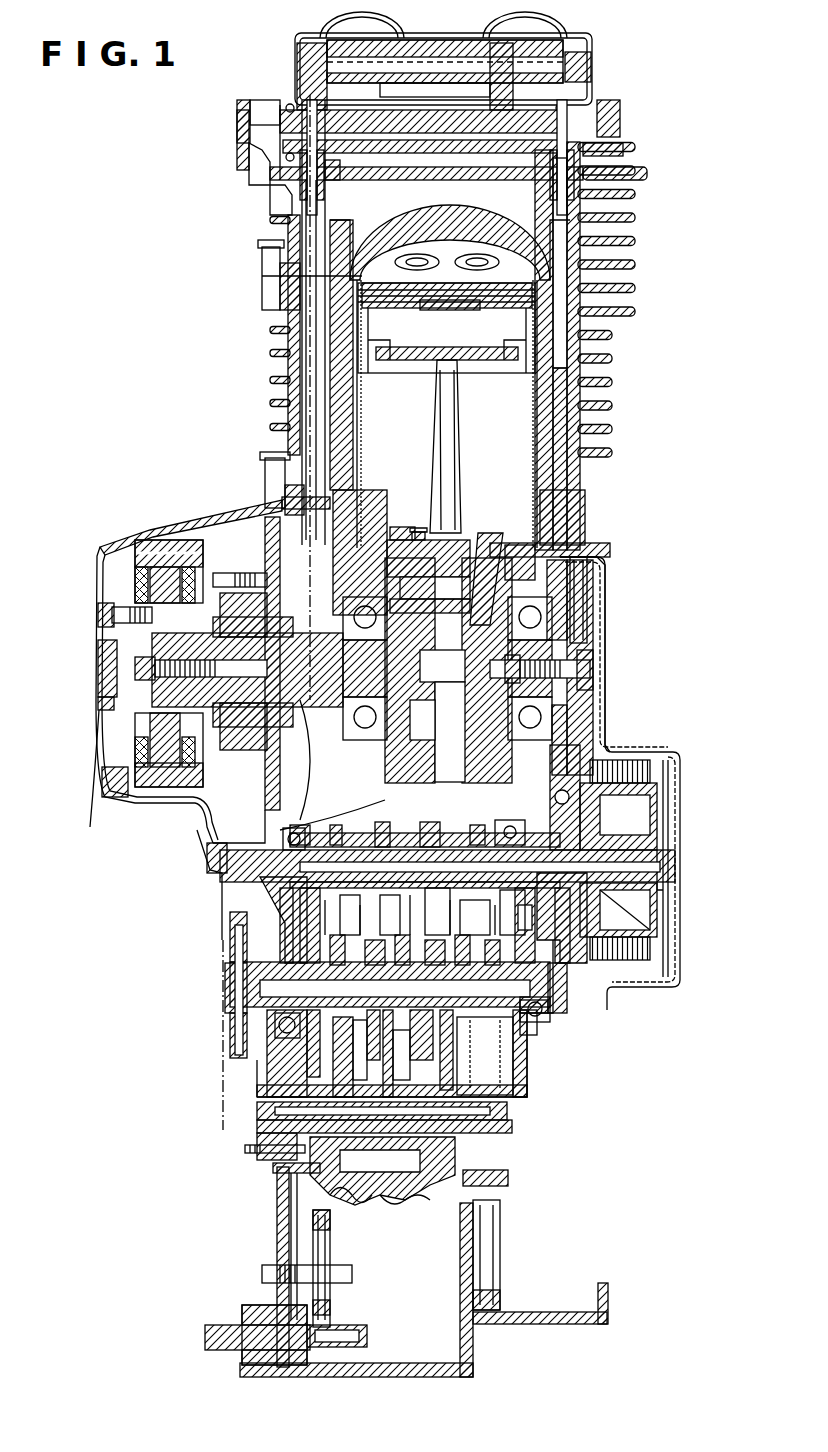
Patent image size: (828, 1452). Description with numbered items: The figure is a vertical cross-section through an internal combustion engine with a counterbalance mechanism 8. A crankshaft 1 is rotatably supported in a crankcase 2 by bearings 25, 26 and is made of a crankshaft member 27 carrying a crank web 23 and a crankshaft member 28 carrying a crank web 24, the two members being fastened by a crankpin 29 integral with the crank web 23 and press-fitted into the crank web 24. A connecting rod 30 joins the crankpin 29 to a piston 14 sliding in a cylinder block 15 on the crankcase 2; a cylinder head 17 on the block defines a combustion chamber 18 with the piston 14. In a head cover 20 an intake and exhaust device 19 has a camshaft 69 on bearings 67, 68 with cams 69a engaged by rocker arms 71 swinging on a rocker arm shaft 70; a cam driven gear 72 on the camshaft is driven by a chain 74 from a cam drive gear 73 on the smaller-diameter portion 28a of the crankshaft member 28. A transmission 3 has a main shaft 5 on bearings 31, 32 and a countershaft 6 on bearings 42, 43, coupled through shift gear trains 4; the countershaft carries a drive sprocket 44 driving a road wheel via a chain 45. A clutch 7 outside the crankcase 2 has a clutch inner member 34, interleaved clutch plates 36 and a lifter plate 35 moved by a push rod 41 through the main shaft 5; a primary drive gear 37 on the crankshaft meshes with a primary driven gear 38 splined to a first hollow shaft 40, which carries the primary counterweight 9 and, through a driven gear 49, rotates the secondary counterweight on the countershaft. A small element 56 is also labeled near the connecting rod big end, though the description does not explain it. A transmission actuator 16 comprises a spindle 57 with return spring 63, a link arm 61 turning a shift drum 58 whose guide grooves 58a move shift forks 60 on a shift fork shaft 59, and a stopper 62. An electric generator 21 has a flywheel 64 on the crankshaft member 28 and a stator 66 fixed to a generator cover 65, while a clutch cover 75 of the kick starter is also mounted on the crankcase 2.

The crankshaft 1 is at (337, 692).
The crankcase 2 is at (581, 526).
The transmission 3 is at (210, 1013).
The shift gear trains 4 is at (372, 822).
The main shaft 5 is at (470, 820).
The countershaft 6 is at (237, 967).
The clutch 7 is at (670, 753).
The counterbalance mechanism 8 is at (482, 1038).
The primary counterweight 9 is at (473, 817).
The piston 14 is at (507, 382).
The cylinder block 15 is at (612, 354).
The transmission actuator 16 is at (407, 1240).
The cylinder head 17 is at (624, 185).
The combustion chamber 18 is at (447, 257).
The intake and exhaust device 19 is at (272, 105).
The head cover 20 is at (452, 58).
The electric generator 21 is at (147, 818).
The crank web 23 is at (502, 554).
The crank web 24 is at (401, 518).
The bearing 25 is at (567, 613).
The bearing 26 is at (287, 545).
The crankshaft member 27 is at (515, 545).
The crankshaft member 28 is at (410, 537).
The smaller-diameter portion 28a is at (322, 700).
The crankpin 29 is at (413, 617).
The connecting rod 30 is at (460, 435).
The bearing 31 is at (273, 833).
The bearing 32 is at (567, 737).
The clutch inner member 34 is at (680, 918).
The lifter plate 35 is at (680, 900).
The clutch plates 36 is at (657, 760).
The primary drive gear 37 is at (577, 713).
The primary driven gear 38 is at (563, 975).
The first hollow shaft 40 is at (473, 830).
The push rod 41 is at (660, 862).
The bearing 42 is at (273, 923).
The bearing 43 is at (550, 1027).
The drive sprocket 44 is at (227, 1037).
The chain 45 is at (220, 993).
The driven gear 49 is at (513, 1070).
The oil bolt 56 is at (417, 530).
The spindle 57 is at (212, 1326).
The shift drum 58 is at (440, 1210).
The guide grooves 58a is at (357, 1160).
The shift fork shaft 59 is at (253, 1113).
The shift forks 60 is at (427, 1212).
The link arm 61 is at (330, 1243).
The stopper 62 is at (500, 1210).
The return spring 63 is at (355, 1325).
The flywheel 64 is at (162, 540).
The generator cover 65 is at (90, 780).
The stator 66 is at (128, 548).
The bearing 67 is at (288, 112).
The bearing 68 is at (597, 97).
The camshaft 69 is at (284, 150).
The cams 69a is at (338, 185).
The rocker arm shaft 70 is at (413, 57).
The rocker arms 71 is at (425, 68).
The cam driven gear 72 is at (300, 186).
The cam drive gear 73 is at (280, 597).
The chain 74 is at (303, 435).
The clutch cover 75 is at (610, 647).